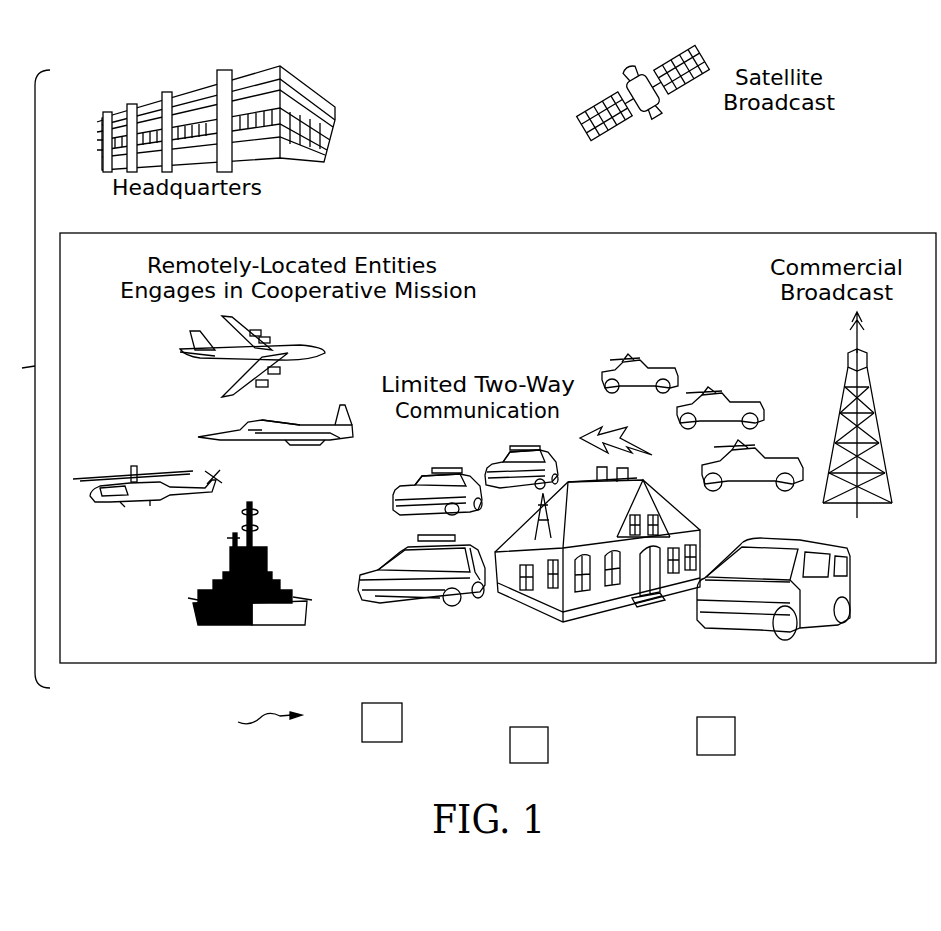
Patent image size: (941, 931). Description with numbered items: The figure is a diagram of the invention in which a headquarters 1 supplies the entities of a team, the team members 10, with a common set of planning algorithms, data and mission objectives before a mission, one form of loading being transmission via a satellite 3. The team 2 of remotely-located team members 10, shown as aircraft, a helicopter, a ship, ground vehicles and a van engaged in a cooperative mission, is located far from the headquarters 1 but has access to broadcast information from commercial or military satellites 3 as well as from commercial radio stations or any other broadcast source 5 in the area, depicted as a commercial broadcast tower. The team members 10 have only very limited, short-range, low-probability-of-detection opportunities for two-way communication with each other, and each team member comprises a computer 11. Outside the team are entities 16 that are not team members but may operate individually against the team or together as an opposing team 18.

The headquarters 1 is at (303, 82).
The cooperative mission system 2 is at (26, 379).
The satellite 3 is at (622, 82).
The broadcast source 5 is at (860, 336).
The team members 10 is at (315, 345).
The computer 11 is at (449, 467).
The entities 16 is at (388, 722).
The opposing team 18 is at (257, 720).